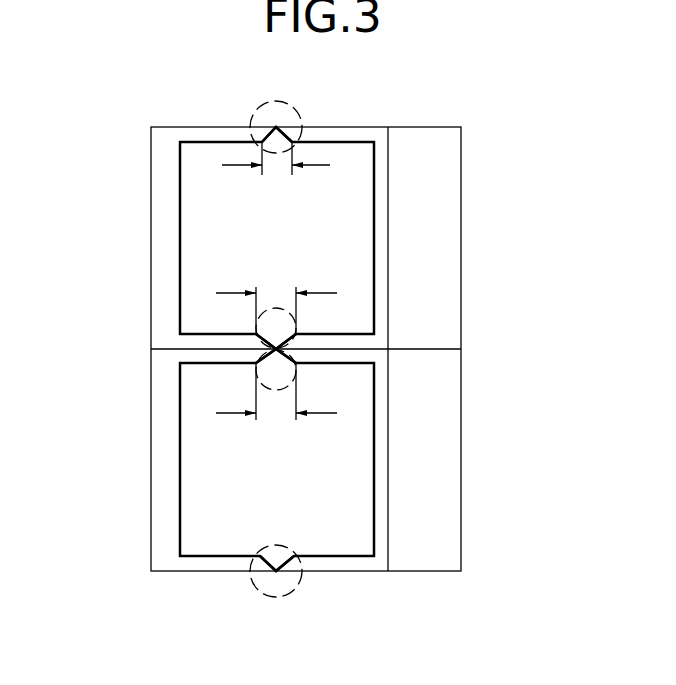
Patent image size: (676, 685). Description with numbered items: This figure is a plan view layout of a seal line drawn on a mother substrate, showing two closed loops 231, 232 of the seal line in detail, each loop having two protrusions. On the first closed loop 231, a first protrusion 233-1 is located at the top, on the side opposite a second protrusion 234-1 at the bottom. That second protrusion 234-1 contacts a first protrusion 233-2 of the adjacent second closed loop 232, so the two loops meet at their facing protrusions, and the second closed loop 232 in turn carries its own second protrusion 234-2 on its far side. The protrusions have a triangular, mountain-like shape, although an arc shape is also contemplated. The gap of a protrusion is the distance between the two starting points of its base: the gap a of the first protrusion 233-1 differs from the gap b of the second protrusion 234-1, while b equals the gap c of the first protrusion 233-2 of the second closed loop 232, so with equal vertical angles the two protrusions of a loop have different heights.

The first closed loop 231 is at (180, 224).
The second closed loop 232 is at (374, 223).
The first protrusion 233-1 is at (300, 108).
The first protrusion of the second closed loop 233-2 is at (296, 382).
The second protrusion 234-1 is at (296, 316).
The second protrusion of the second closed loop 234-2 is at (292, 590).